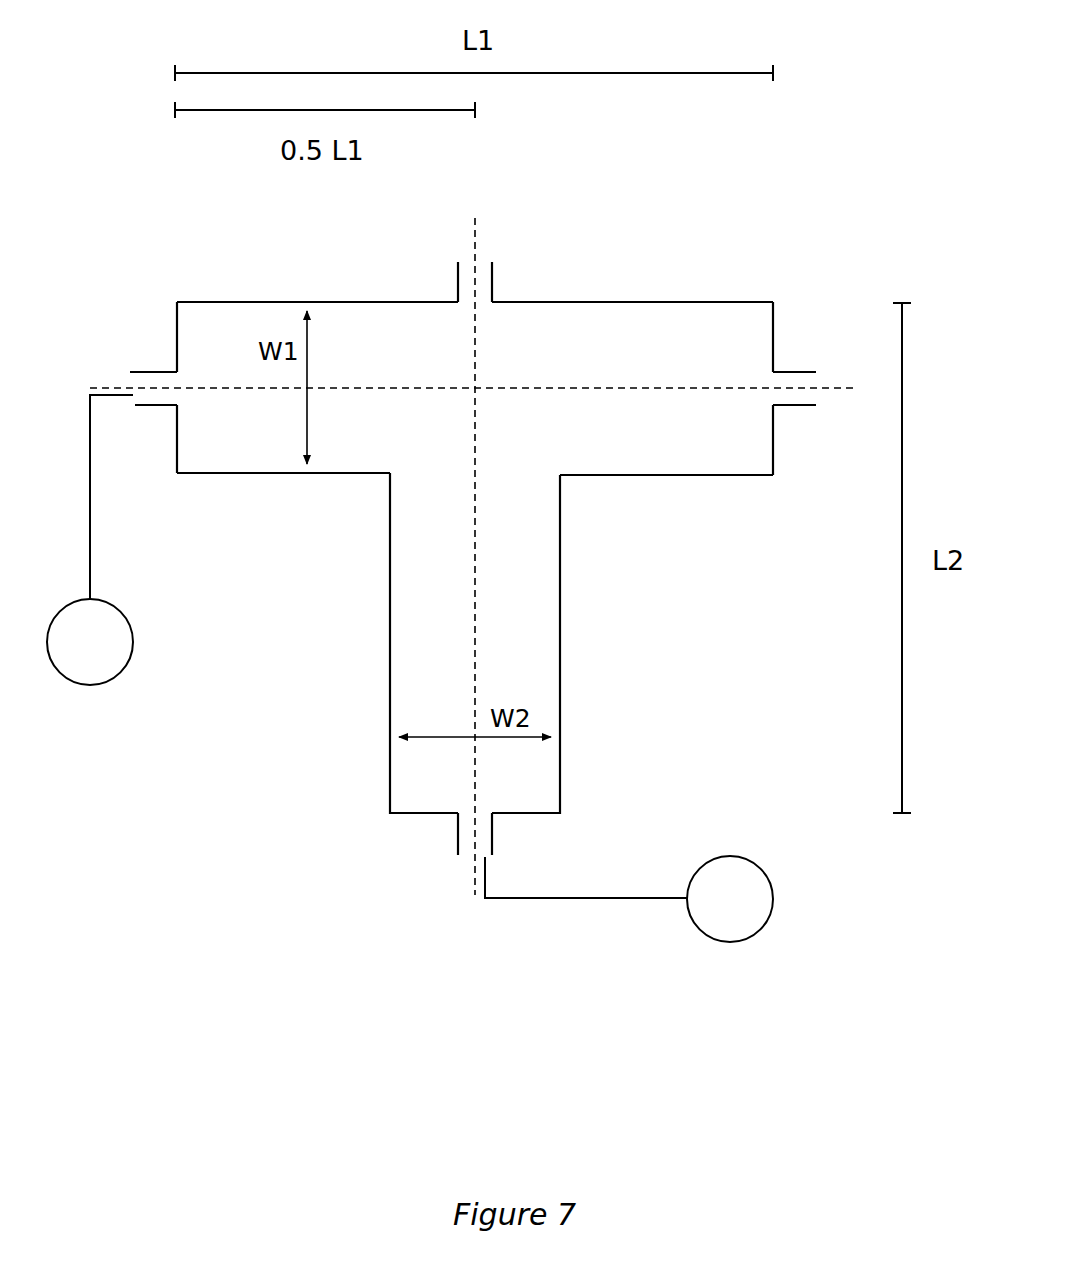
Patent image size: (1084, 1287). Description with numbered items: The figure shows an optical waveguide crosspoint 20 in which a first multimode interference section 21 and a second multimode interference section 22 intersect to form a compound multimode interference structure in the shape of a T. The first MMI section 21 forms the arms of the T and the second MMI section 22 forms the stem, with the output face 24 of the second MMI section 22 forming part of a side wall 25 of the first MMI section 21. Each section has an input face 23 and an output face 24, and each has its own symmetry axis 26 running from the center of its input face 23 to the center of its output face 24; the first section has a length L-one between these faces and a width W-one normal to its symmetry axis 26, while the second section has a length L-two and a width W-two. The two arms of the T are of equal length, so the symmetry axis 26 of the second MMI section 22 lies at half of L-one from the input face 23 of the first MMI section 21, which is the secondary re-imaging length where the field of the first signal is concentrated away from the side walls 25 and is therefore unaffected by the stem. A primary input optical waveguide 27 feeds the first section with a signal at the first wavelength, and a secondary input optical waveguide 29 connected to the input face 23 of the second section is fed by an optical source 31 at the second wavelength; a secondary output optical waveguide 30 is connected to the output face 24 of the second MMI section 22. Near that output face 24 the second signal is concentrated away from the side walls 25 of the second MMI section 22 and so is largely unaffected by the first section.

The optical waveguide crosspoint 20 is at (795, 178).
The first multimode interference section 21 is at (602, 338).
The second multimode interference section 22 is at (522, 619).
The input face 23 is at (165, 335).
The output face 24 is at (410, 298).
The side wall 25 is at (260, 298).
The symmetry axis 26 is at (655, 383).
The primary input optical waveguide 27 is at (138, 410).
The secondary input optical waveguide 29 is at (493, 838).
The secondary output optical waveguide 30 is at (492, 275).
The optical source 31 is at (629, 899).